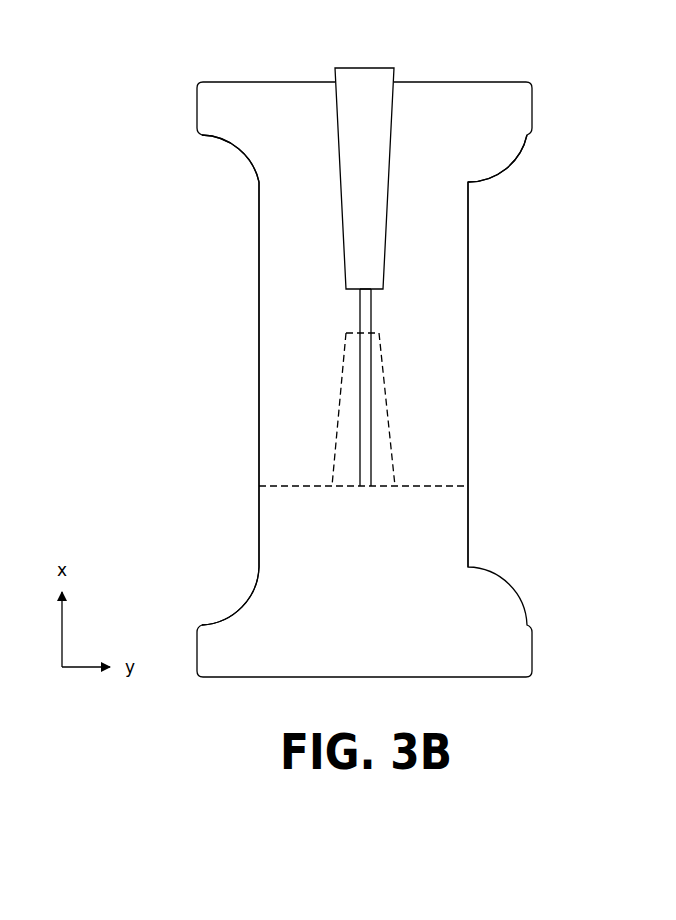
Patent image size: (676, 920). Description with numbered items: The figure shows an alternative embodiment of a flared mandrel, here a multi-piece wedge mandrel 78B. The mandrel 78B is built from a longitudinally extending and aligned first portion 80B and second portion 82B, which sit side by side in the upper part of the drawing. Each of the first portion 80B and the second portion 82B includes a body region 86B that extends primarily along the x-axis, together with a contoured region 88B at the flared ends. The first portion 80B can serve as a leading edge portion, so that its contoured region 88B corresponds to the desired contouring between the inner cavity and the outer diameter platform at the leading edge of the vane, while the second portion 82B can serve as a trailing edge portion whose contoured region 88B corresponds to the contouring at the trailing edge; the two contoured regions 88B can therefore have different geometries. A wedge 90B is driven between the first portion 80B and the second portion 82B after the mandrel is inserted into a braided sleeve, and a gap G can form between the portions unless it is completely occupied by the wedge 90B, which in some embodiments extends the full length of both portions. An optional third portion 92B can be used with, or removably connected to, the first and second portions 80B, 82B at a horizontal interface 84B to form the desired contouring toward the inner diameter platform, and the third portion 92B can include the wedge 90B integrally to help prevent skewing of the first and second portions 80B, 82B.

The mandrel 78B is at (106, 135).
The first portion 80B is at (287, 340).
The second portion 82B is at (438, 340).
The horizontal interface 84B is at (435, 486).
The body region 86B is at (259, 465).
The contoured region 88B is at (235, 150).
The wedge 90B is at (395, 108).
The third portion 92B is at (365, 613).
The gap G is at (366, 302).